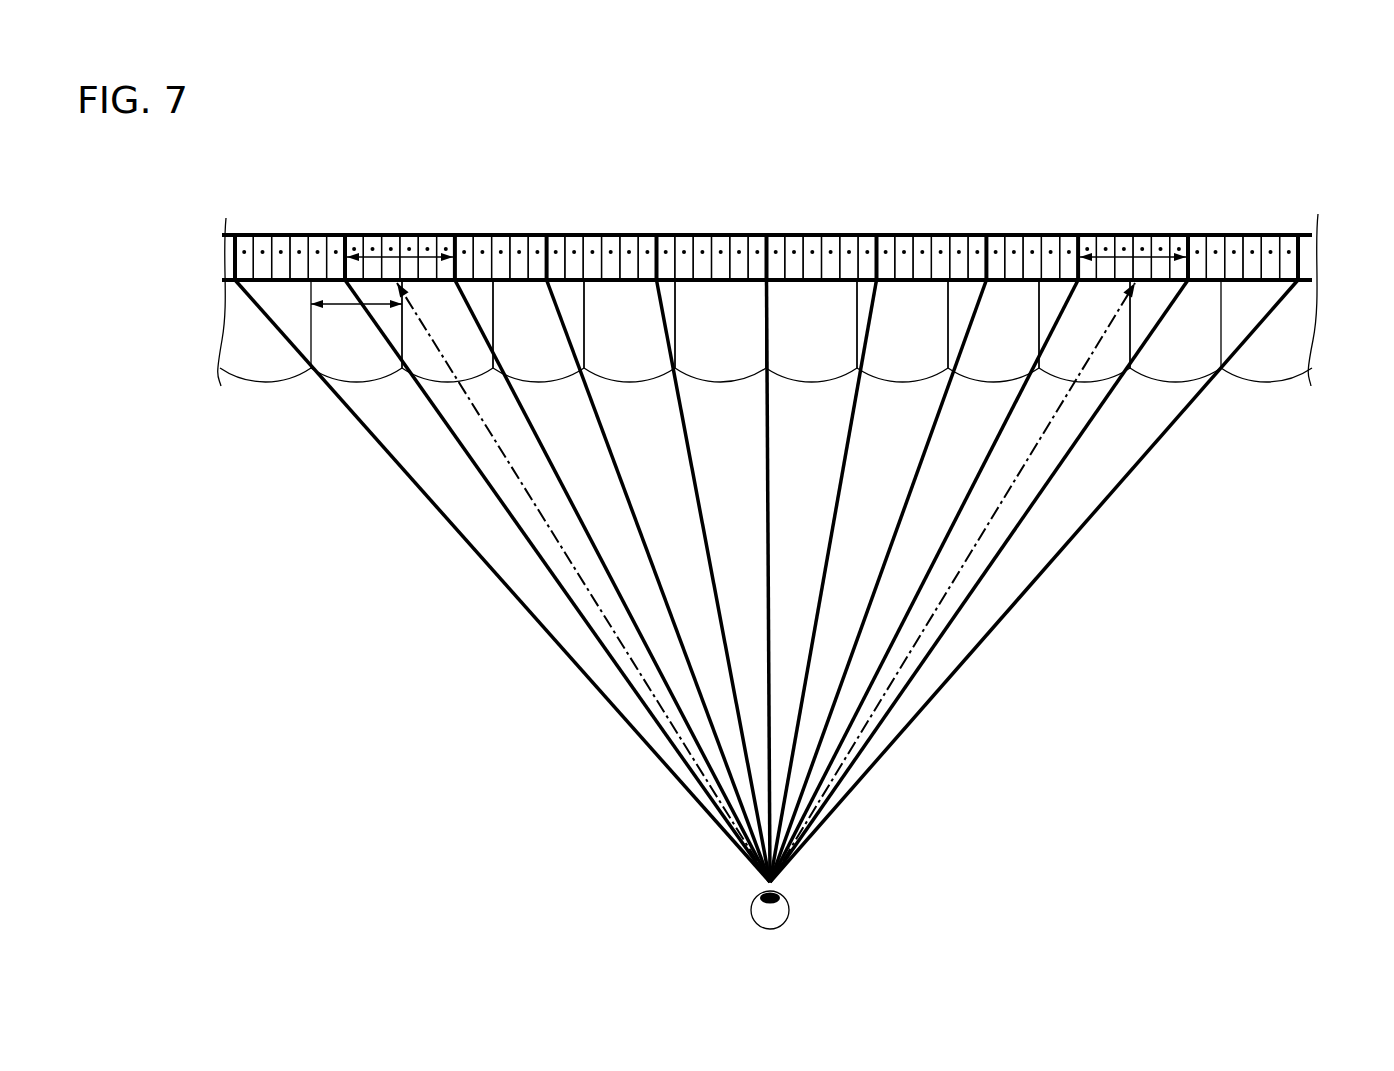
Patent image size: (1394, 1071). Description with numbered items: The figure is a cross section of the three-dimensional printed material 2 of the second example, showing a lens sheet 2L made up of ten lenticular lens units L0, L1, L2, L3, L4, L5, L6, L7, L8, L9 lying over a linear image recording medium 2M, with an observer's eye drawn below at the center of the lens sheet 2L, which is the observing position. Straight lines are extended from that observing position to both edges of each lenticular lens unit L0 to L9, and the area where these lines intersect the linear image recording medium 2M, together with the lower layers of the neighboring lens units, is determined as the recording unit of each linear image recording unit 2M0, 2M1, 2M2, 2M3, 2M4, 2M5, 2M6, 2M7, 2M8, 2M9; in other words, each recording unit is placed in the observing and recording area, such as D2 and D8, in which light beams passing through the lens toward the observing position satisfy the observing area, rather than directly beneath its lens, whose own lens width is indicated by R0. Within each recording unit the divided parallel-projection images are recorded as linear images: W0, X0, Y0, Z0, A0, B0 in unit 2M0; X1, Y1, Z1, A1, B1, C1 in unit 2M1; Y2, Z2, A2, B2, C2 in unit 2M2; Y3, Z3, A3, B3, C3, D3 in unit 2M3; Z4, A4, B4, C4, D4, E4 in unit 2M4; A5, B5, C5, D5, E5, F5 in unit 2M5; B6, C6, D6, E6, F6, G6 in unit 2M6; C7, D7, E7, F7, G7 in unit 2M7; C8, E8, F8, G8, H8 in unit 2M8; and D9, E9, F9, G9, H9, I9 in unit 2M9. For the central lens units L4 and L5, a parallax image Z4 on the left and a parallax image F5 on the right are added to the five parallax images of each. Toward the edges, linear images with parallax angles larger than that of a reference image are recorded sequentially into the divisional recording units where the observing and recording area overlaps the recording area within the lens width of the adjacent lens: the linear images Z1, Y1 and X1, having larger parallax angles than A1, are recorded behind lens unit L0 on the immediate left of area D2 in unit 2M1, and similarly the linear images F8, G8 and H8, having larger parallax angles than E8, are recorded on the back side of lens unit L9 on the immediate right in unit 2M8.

The three-dimensional printed material 2 is at (1324, 402).
The linear image recording medium 2M is at (1310, 256).
The lens sheet 2L is at (797, 375).
The linear image recording unit 2M0 is at (237, 124).
The linear image recording unit 2M1 is at (347, 176).
The linear image recording unit 2M2 is at (545, 124).
The linear image recording unit 2M3 is at (549, 176).
The linear image recording unit 2M4 is at (658, 124).
The linear image recording unit 2M5 is at (768, 176).
The linear image recording unit 2M6 is at (878, 124).
The linear image recording unit 2M7 is at (988, 176).
The linear image recording unit 2M8 is at (1080, 124).
The linear image recording unit 2M9 is at (1190, 176).
The lenticular lens unit L0 is at (356, 331).
The lenticular lens unit L1 is at (447, 331).
The lenticular lens unit L2 is at (538, 331).
The lenticular lens unit L3 is at (629, 331).
The lenticular lens unit L4 is at (720, 331).
The lenticular lens unit L5 is at (811, 331).
The lenticular lens unit L6 is at (902, 331).
The lenticular lens unit L7 is at (993, 331).
The lenticular lens unit L8 is at (1084, 331).
The lenticular lens unit L9 is at (1175, 331).
The lens width R0 is at (337, 305).
The observing and recording area D2 is at (386, 262).
The observing and recording area D8 is at (1140, 252).
The linear image W0 is at (244, 252).
The linear image X0 is at (262, 252).
The linear image Y0 is at (281, 252).
The linear image Z0 is at (299, 252).
The linear image A0 is at (318, 252).
The linear image B0 is at (336, 252).
The linear image X1 is at (354, 249).
The linear image Y1 is at (372, 249).
The linear image Z1 is at (391, 249).
The linear image A1 is at (409, 249).
The linear image B1 is at (427, 249).
The linear image C1 is at (446, 249).
The linear image Y2 is at (464, 252).
The linear image Z2 is at (482, 252).
The linear image A2 is at (501, 252).
The linear image B2 is at (519, 252).
The linear image C2 is at (537, 252).
The linear image Y3 is at (556, 252).
The linear image Z3 is at (574, 252).
The linear image A3 is at (592, 252).
The linear image B3 is at (611, 252).
The linear image C3 is at (629, 252).
The linear image D3 is at (647, 252).
The parallax image Z4 is at (666, 252).
The linear image A4 is at (684, 252).
The linear image B4 is at (702, 252).
The linear image C4 is at (721, 252).
The linear image D4 is at (739, 252).
The linear image E4 is at (757, 252).
The linear image A5 is at (776, 252).
The linear image B5 is at (794, 252).
The linear image C5 is at (812, 252).
The linear image D5 is at (831, 252).
The linear image E5 is at (849, 252).
The parallax image F5 is at (867, 252).
The linear image B6 is at (886, 252).
The linear image C6 is at (904, 252).
The linear image D6 is at (922, 252).
The linear image E6 is at (941, 252).
The linear image F6 is at (959, 252).
The linear image G6 is at (977, 252).
The linear image C7 is at (996, 252).
The linear image D7 is at (1014, 252).
The linear image E7 is at (1032, 252).
The linear image F7 is at (1051, 252).
The linear image G7 is at (1069, 252).
The linear image C8 is at (1087, 249).
The linear image E8 is at (1124, 249).
The linear image F8 is at (1142, 249).
The linear image G8 is at (1160, 249).
The linear image H8 is at (1179, 249).
The linear image D9 is at (1197, 252).
The linear image E9 is at (1216, 252).
The linear image F9 is at (1234, 252).
The linear image G9 is at (1252, 252).
The linear image H9 is at (1270, 252).
The linear image I9 is at (1289, 252).